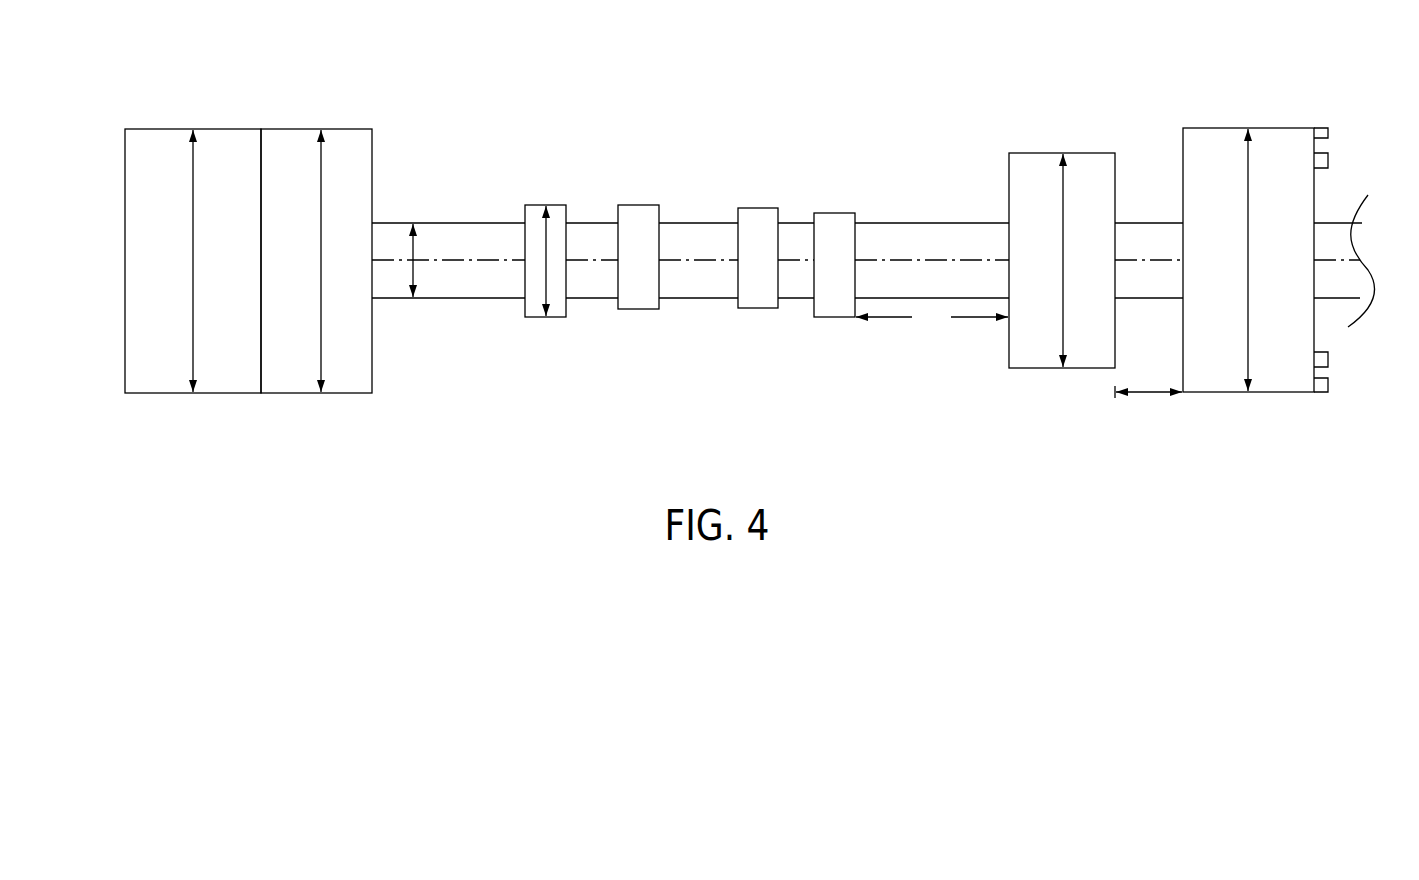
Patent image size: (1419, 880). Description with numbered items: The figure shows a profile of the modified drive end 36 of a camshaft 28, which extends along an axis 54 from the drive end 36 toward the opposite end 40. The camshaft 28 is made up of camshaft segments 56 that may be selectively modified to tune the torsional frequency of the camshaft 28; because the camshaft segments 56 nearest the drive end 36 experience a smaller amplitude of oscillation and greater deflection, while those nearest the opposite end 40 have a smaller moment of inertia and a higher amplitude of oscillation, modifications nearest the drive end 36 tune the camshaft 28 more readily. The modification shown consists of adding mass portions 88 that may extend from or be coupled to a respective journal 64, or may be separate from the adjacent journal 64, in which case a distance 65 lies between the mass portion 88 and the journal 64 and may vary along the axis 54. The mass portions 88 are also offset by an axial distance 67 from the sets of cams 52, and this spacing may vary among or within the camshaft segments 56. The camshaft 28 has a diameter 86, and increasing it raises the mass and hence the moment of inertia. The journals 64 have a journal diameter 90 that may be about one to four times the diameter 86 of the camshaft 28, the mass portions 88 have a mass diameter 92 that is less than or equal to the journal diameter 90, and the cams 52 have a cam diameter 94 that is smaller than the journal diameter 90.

The camshaft 28 is at (448, 222).
The drive end 36 is at (111, 125).
The opposite end 40 is at (1303, 81).
The cams 52 is at (533, 204).
The axis 54 is at (447, 260).
The camshaft segments 56 is at (663, 81).
The journal 64 is at (173, 128).
The distance 65 is at (1146, 396).
The axial distance 67 is at (932, 318).
The diameter 86 is at (417, 273).
The mass portion 88 is at (288, 128).
The journal diameter 90 is at (192, 260).
The mass diameter 92 is at (320, 260).
The cam diameter 94 is at (547, 260).